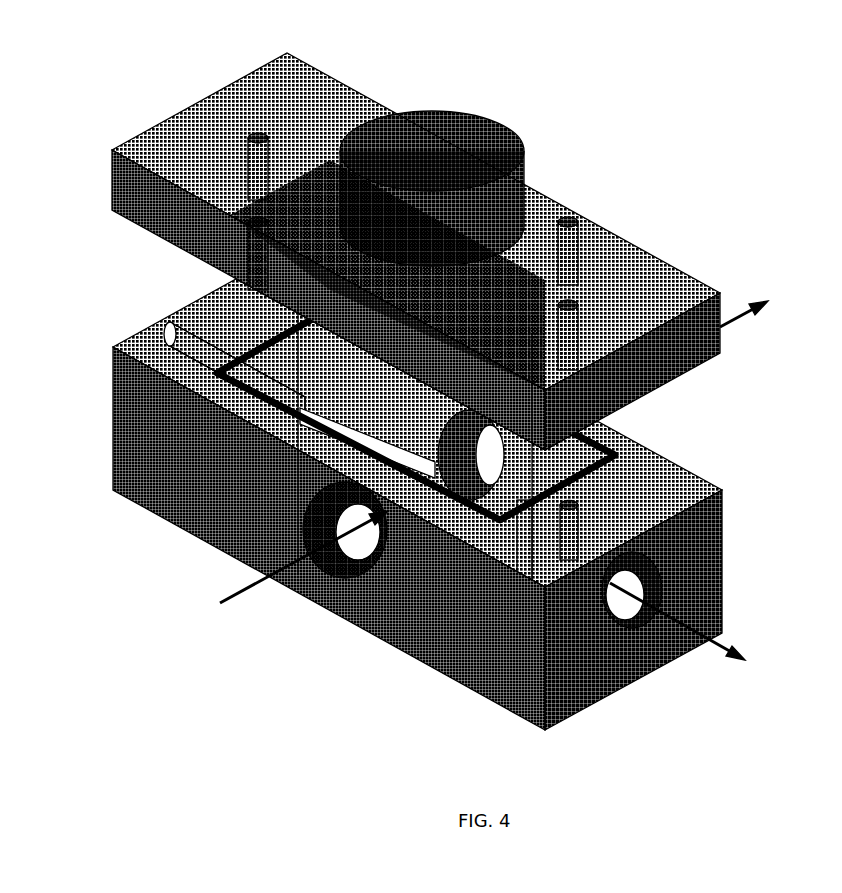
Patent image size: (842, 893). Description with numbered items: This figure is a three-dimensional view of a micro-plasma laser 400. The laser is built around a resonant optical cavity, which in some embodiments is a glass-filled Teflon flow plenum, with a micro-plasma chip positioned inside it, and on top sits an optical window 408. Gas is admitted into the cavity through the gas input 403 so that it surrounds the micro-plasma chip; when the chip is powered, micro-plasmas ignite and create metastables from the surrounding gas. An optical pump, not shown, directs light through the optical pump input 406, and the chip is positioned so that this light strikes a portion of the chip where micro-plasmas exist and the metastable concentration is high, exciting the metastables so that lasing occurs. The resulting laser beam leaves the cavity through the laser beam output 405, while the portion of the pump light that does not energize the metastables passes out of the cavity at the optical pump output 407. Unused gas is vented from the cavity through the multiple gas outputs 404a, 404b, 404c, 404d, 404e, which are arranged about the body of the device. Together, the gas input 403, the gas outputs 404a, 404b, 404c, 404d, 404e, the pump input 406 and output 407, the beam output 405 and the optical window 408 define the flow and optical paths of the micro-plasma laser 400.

The micro-plasma laser 400 is at (438, 386).
The gas input 403 is at (173, 352).
The gas output 404a is at (577, 232).
The gas output 404b is at (583, 320).
The gas output 404c is at (413, 317).
The gas output 404d is at (253, 223).
The gas output 404e is at (253, 138).
The laser beam output 405 is at (638, 622).
The optical pump input 406 is at (333, 577).
The optical pump output 407 is at (503, 474).
The optical window 408 is at (426, 103).